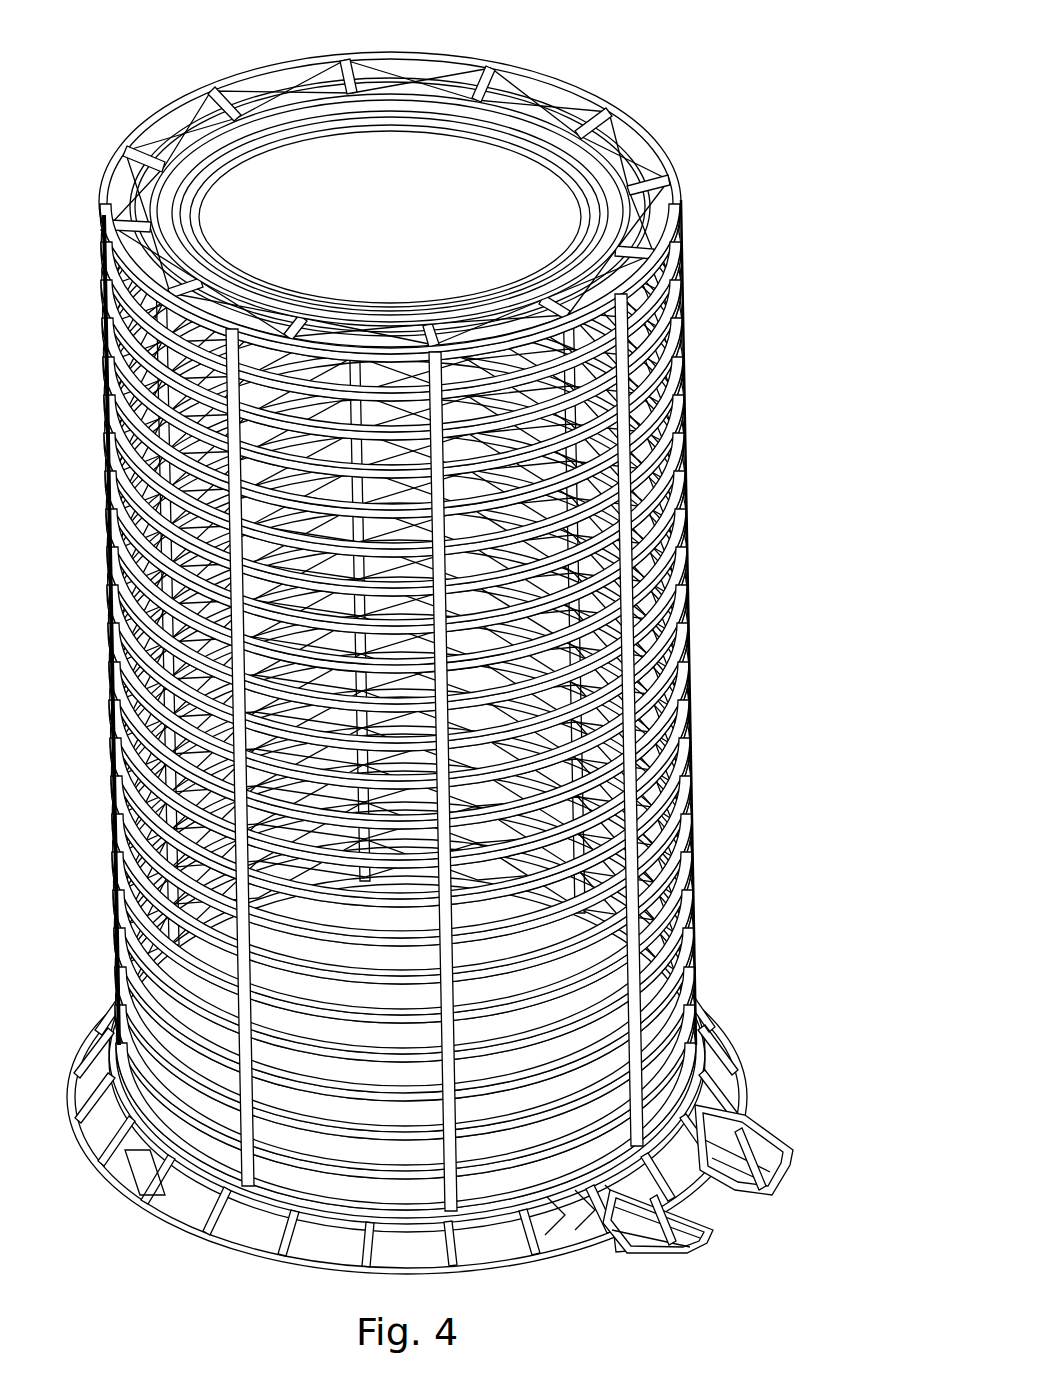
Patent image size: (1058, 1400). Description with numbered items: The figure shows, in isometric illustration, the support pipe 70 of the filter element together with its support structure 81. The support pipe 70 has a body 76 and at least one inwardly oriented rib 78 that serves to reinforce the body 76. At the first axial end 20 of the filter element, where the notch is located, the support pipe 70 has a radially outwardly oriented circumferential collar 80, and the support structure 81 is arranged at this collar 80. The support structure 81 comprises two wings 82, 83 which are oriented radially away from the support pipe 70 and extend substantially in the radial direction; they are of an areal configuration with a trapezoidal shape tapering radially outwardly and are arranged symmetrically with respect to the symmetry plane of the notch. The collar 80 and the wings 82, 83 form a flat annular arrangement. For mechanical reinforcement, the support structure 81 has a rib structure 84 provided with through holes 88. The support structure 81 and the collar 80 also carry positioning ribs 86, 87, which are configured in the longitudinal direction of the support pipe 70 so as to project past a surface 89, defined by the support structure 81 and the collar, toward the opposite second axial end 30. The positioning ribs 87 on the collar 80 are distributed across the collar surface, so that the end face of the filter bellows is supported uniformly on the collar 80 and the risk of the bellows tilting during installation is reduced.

The first axial end 20 is at (245, 1272).
The second axial end 30 is at (560, 82).
The support pipe 70 is at (732, 209).
The body 76 is at (682, 410).
The rib 78 is at (652, 553).
The collar 80 is at (735, 1048).
The support structure 81 is at (749, 1192).
The wing 82 is at (713, 1243).
The wing 83 is at (775, 1137).
The rib structure 84 is at (647, 1253).
The positioning rib 86 is at (777, 1170).
The positioning rib 87 is at (673, 1163).
The through hole 88 is at (627, 1243).
The surface 89 is at (138, 1184).